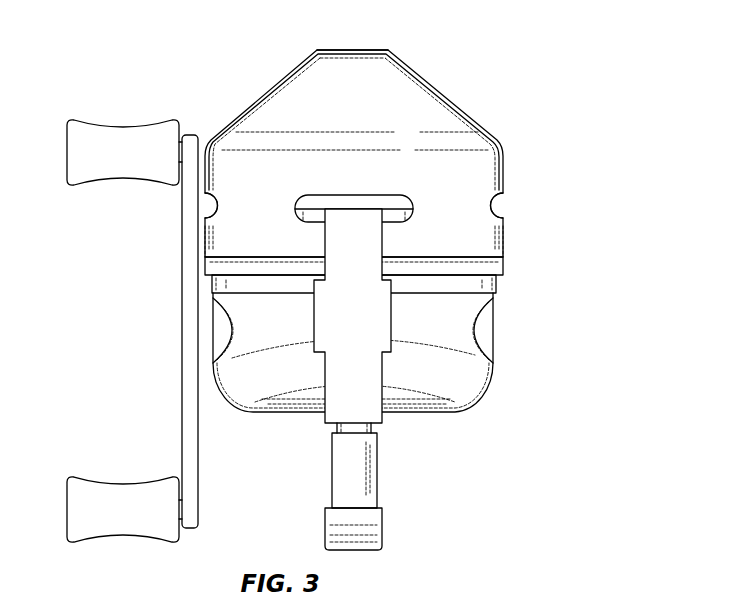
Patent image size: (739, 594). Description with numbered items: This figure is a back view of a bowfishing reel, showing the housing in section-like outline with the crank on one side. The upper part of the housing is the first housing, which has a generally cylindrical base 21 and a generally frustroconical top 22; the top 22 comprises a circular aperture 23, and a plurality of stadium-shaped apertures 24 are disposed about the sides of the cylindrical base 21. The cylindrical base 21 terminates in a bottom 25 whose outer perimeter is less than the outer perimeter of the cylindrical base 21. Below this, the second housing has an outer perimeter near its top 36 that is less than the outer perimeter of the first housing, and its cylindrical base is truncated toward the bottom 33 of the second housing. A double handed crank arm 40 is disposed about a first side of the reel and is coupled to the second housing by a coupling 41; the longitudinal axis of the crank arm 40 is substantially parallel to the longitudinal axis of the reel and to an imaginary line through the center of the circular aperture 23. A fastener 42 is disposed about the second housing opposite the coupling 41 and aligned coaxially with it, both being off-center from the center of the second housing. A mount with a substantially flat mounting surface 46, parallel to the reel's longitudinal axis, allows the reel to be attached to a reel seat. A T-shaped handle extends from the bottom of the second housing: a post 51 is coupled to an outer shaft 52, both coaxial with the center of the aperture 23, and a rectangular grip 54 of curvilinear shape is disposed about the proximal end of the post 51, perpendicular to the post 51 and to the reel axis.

The cylindrical base 21 is at (472, 172).
The frustroconical top 22 is at (418, 90).
The circular aperture 23 is at (363, 49).
The stadium-shaped aperture 24 is at (497, 207).
The bottom 25 is at (497, 271).
The top 36 is at (487, 287).
The bottom 33 is at (421, 406).
The fastener 42 is at (486, 333).
The flat mounting surface 46 is at (364, 393).
The outer shaft 52 is at (336, 430).
The post 51 is at (346, 476).
The rectangular grip 54 is at (372, 530).
The coupling 41 is at (205, 357).
The double handed crank arm 40 is at (144, 270).